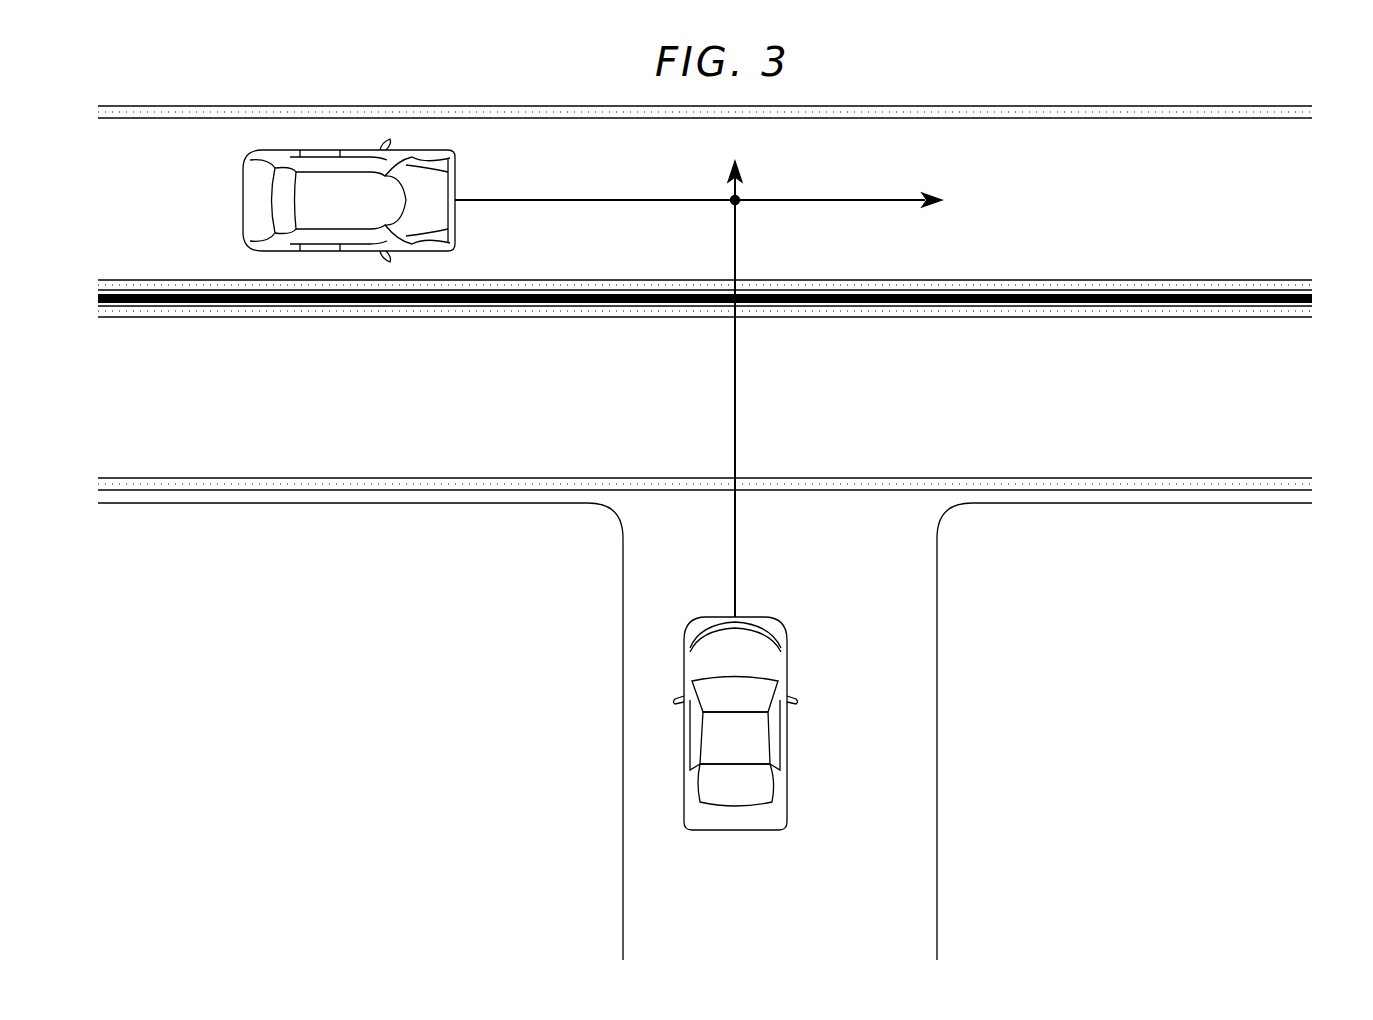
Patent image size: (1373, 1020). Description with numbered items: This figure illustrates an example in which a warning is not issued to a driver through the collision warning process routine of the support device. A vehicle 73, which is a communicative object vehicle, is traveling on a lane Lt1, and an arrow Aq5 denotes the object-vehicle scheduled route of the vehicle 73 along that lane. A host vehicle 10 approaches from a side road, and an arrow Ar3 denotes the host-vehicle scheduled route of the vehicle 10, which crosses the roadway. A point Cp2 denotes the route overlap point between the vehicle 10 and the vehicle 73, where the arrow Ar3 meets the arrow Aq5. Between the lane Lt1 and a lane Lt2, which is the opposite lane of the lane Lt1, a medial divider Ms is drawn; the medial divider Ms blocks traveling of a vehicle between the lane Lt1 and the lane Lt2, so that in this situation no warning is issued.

The vehicle 73 is at (242, 187).
The vehicle 10 is at (701, 833).
The arrow Aq5 is at (590, 199).
The arrow Ar3 is at (737, 530).
The point Cp2 is at (739, 205).
The lane Lt1 is at (1326, 208).
The medial divider Ms is at (1326, 293).
The lane Lt2 is at (1326, 392).